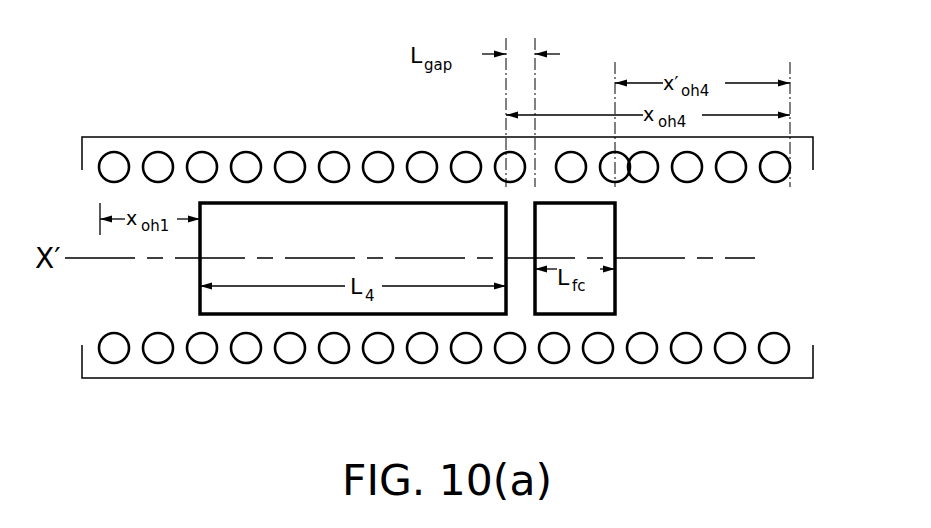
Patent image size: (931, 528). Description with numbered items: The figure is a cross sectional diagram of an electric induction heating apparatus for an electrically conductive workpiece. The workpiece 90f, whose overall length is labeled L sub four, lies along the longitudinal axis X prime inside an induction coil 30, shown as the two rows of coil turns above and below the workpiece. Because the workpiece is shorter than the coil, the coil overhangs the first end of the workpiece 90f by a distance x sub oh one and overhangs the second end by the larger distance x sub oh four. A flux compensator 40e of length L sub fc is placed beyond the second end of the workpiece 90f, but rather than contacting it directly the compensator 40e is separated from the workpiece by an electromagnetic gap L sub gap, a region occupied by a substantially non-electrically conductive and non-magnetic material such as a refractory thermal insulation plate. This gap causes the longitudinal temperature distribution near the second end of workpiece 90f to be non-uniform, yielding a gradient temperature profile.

The induction coil 30 is at (423, 137).
The workpiece 90f is at (349, 241).
The flux compensator 40e is at (555, 241).